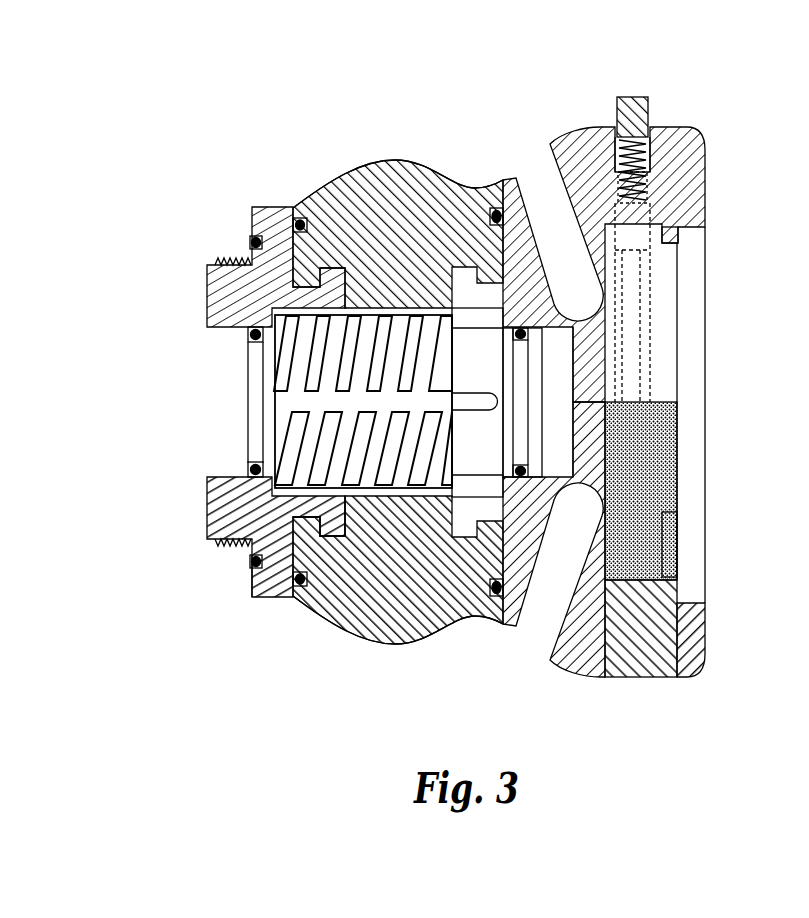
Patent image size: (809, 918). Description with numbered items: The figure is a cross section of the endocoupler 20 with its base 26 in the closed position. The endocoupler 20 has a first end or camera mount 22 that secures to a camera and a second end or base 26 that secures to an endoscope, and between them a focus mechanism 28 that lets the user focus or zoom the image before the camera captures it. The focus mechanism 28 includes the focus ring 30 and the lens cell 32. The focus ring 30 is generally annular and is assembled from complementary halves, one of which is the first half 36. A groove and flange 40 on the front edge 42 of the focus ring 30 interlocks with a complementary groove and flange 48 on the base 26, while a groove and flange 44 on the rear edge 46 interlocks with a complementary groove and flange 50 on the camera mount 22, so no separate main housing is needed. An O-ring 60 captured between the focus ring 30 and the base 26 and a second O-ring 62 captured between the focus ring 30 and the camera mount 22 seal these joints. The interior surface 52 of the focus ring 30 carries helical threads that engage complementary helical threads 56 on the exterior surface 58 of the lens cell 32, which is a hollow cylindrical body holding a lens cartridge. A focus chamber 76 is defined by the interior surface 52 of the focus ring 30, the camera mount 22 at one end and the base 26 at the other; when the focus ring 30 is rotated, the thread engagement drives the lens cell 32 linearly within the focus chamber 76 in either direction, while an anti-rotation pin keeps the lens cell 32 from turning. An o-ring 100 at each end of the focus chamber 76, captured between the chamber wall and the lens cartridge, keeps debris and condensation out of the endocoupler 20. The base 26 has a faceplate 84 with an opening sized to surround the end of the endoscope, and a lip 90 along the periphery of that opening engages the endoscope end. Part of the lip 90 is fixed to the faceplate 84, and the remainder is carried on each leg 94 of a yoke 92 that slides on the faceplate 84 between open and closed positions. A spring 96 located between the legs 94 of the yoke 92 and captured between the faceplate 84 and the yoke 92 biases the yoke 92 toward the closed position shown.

The endocoupler 20 is at (700, 692).
The camera mount 22 is at (230, 262).
The base 26 is at (276, 318).
The focus mechanism 28 is at (427, 150).
The focus ring 30 is at (338, 200).
The lens cell 32 is at (281, 424).
The first half 36 is at (380, 188).
The groove and flange 40 is at (458, 528).
The front edge 42 is at (503, 584).
The groove and flange 44 is at (346, 546).
The rear edge 46 is at (288, 552).
The groove and flange 48 is at (500, 512).
The groove and flange 50 is at (302, 512).
The interior surface 52 is at (400, 333).
The helical threads 56 is at (428, 453).
The exterior surface 58 is at (363, 326).
The O-ring 60 is at (496, 208).
The second O-ring 62 is at (296, 225).
The focus chamber 76 is at (558, 385).
The faceplate 84 is at (706, 625).
The lip 90 is at (679, 236).
The yoke 92 is at (634, 96).
The leg 94 is at (651, 298).
The spring 96 is at (616, 150).
The o-ring 100 is at (252, 340).